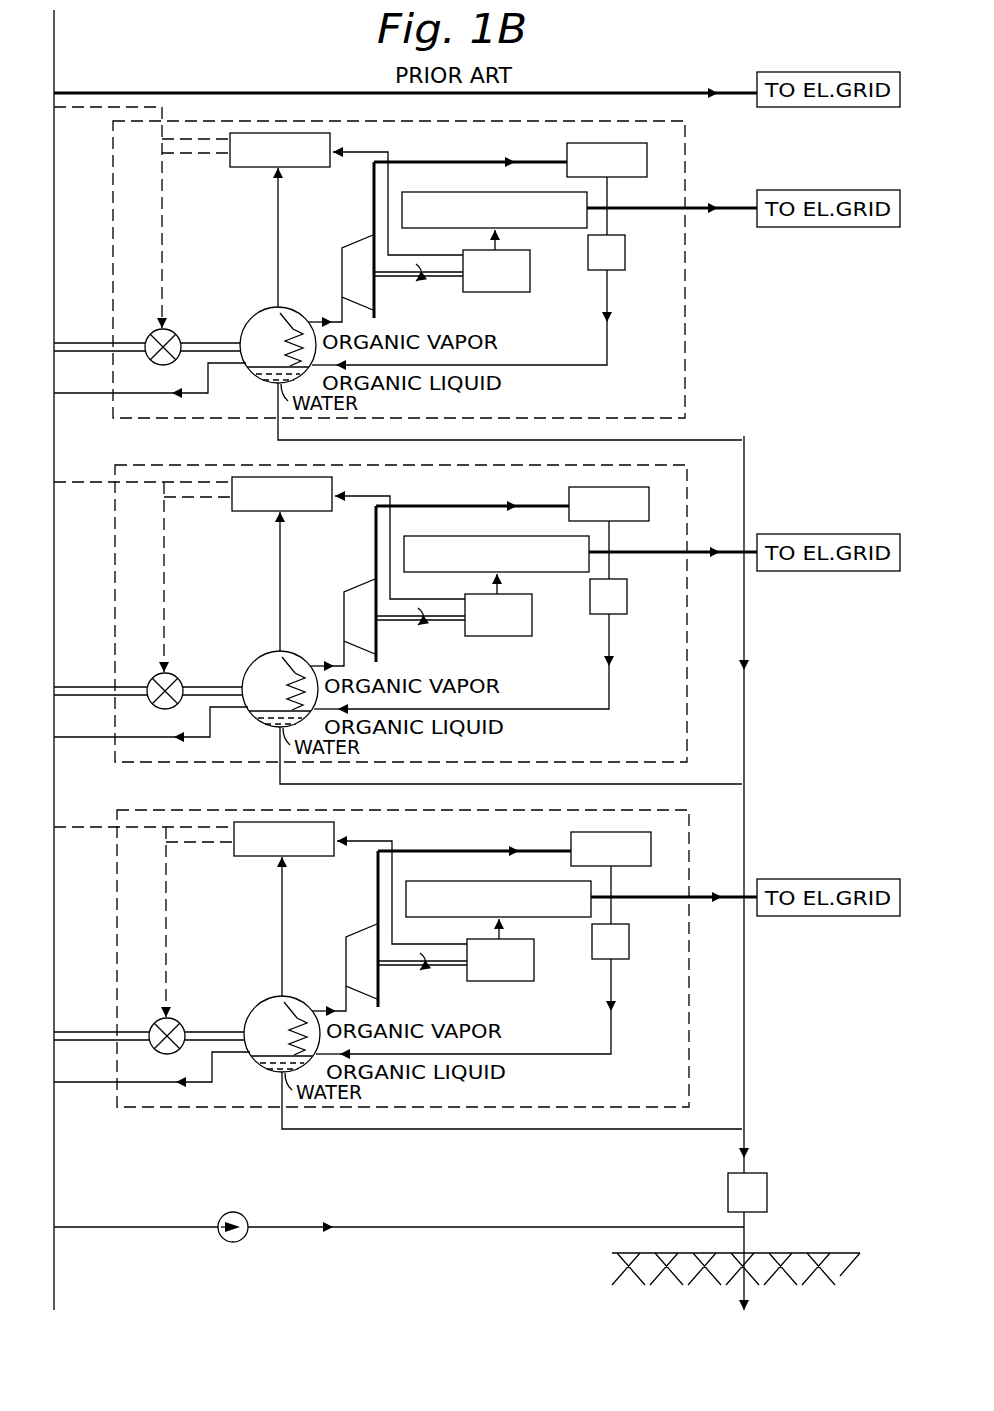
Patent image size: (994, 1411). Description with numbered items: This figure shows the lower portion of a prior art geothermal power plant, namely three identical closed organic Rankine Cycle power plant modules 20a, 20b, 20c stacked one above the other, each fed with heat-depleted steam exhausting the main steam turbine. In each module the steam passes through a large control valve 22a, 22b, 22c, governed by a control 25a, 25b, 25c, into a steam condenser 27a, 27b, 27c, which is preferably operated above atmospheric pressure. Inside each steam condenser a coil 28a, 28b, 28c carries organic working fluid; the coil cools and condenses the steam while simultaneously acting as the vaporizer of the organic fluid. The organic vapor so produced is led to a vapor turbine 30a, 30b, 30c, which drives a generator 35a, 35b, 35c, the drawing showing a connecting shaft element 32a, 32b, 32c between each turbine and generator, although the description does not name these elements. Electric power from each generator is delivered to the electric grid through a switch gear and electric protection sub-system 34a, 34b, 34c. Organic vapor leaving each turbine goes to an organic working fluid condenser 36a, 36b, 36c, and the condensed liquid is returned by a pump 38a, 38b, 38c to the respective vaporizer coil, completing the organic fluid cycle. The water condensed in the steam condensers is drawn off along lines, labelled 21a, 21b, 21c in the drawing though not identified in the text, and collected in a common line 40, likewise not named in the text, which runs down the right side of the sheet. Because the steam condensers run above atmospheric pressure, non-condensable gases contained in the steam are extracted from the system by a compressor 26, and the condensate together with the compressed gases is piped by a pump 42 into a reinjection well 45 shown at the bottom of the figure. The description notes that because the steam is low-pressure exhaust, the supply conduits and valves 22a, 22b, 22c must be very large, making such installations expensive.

The closed organic Rankine Cycle power plant module 20a is at (118, 209).
The water return line a 21a is at (135, 396).
The control valve 22a is at (169, 317).
The control 25a is at (253, 168).
The steam condenser 27a is at (287, 318).
The coil 28a is at (278, 339).
The vapor turbine 30a is at (366, 229).
The shaft a 32a is at (392, 279).
The switch gear and electric production sub-system 34a is at (449, 192).
The generator 35a is at (531, 268).
The organic working fluid condenser 36a is at (567, 146).
The pump 38a is at (625, 253).
The closed organic Rankine Cycle power plant module 20b is at (143, 577).
The water return line b 21b is at (151, 751).
The control valve 22b is at (190, 660).
The control 25b is at (273, 518).
The steam condenser 27b is at (288, 669).
The coil 28b is at (251, 677).
The vapor turbine 30b is at (335, 584).
The shaft b 32b is at (420, 635).
The switch gear and electric production sub-system 34b is at (496, 541).
The generator 35b is at (527, 626).
The organic working fluid condenser 36b is at (575, 494).
The pump 38b is at (489, 644).
The closed organic Rankine Cycle power plant module 20c is at (144, 922).
The water return line c 21c is at (152, 1096).
The control valve 22c is at (191, 1005).
The control 25c is at (275, 863).
The steam condenser 27c is at (289, 1014).
The coil 28c is at (253, 1022).
The vapor turbine 30c is at (337, 929).
The shaft c 32c is at (422, 980).
The switch gear and electric production sub-system 34c is at (498, 886).
The generator 35c is at (528, 971).
The organic working fluid condenser 36c is at (577, 839).
The pump 38c is at (490, 989).
The compressor 26 is at (239, 1212).
The water collection line 40 is at (724, 433).
The pump 42 is at (767, 1191).
The reinjection well 45 is at (754, 1252).